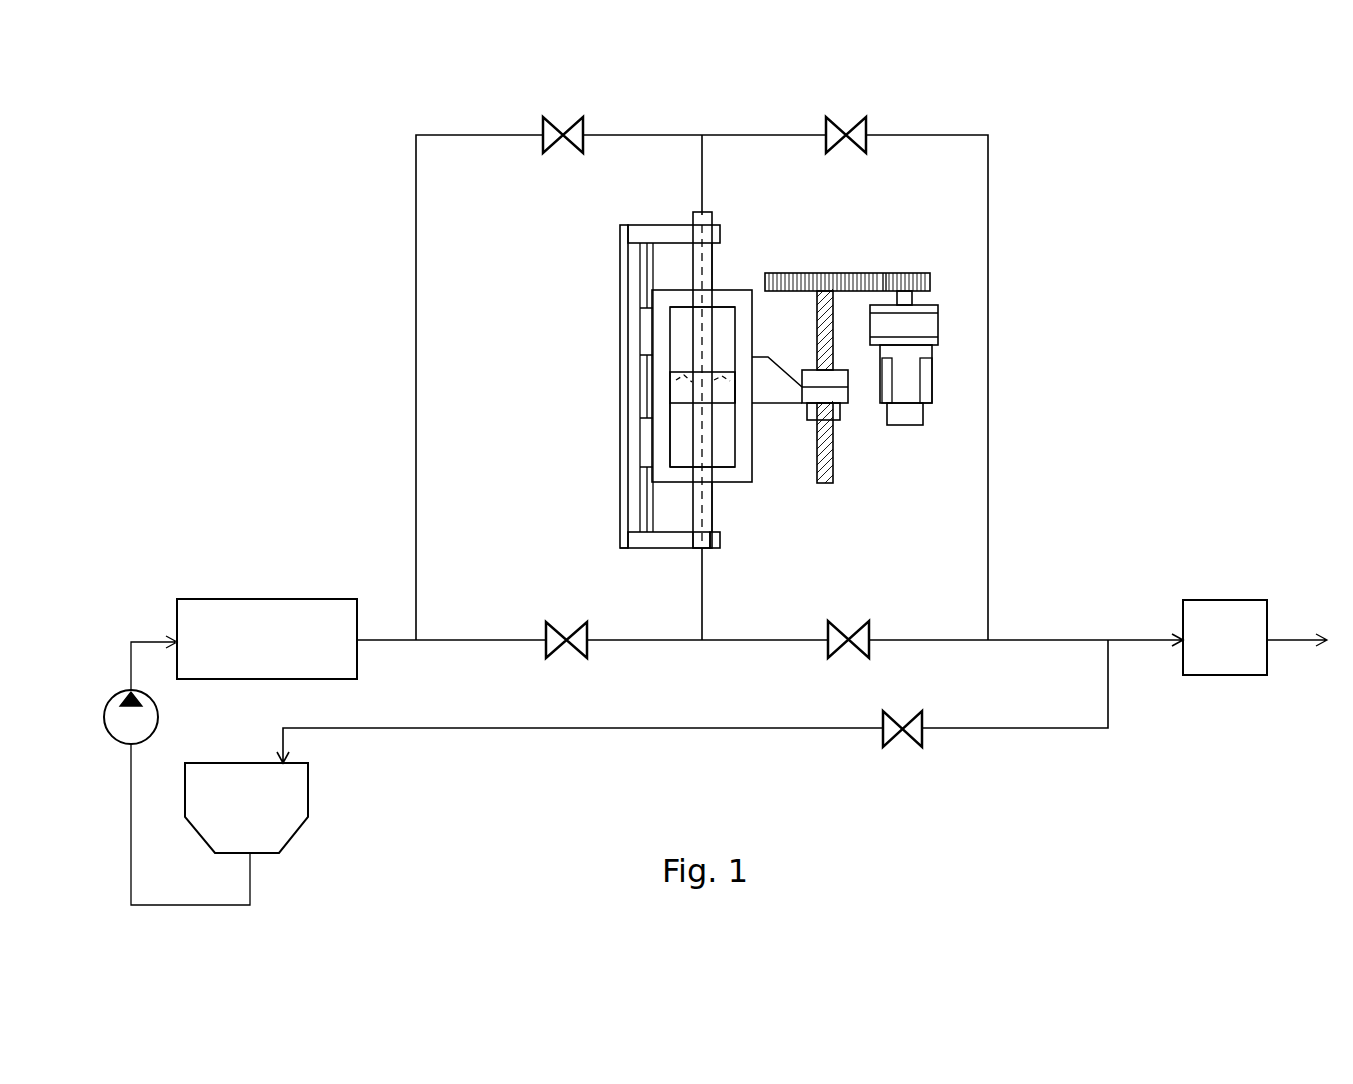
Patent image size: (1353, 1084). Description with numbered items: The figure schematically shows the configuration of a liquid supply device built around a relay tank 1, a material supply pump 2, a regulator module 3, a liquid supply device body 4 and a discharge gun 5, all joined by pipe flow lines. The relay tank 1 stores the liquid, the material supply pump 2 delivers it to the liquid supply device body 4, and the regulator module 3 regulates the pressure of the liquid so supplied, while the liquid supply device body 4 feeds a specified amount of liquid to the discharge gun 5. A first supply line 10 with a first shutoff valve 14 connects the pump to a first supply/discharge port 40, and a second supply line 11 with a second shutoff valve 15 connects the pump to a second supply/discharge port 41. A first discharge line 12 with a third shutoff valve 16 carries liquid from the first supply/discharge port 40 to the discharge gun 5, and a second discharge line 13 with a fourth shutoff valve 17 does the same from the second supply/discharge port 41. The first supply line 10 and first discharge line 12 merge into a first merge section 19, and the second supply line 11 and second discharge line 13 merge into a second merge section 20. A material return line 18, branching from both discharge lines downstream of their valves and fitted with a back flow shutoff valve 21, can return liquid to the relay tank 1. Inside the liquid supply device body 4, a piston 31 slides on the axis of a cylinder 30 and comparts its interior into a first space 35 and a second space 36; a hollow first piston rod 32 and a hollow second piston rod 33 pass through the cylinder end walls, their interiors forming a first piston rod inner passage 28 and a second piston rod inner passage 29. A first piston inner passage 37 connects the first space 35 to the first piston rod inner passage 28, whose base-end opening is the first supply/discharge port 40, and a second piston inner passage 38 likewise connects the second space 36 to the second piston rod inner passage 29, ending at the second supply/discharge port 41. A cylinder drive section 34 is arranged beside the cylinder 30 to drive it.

The relay tank 1 is at (292, 830).
The material supply pump 2 is at (117, 706).
The regulator module 3 is at (285, 607).
The liquid supply device body 4 is at (577, 456).
The discharge gun 5 is at (1220, 612).
The first supply line 10 is at (416, 312).
The second supply line 11 is at (472, 640).
The first discharge line 12 is at (984, 133).
The second discharge line 13 is at (950, 640).
The first shutoff valve 14 is at (555, 120).
The second shutoff valve 15 is at (575, 628).
The third shutoff valve 16 is at (832, 118).
The fourth shutoff valve 17 is at (857, 655).
The material return line 18 is at (1020, 732).
The first merge section 19 is at (702, 160).
The second merge section 20 is at (702, 597).
The back flow shutoff valve 21 is at (912, 742).
The first piston rod inner passage 28 is at (712, 258).
The second piston rod inner passage 29 is at (712, 493).
The cylinder 30 is at (660, 322).
The piston 31 is at (682, 392).
The first piston rod 32 is at (697, 275).
The second piston rod 33 is at (700, 508).
The cylinder drive section 34 is at (882, 452).
The first space 35 is at (722, 338).
The second space 36 is at (678, 443).
The first piston inner passage 37 is at (680, 390).
The second piston inner passage 38 is at (738, 392).
The first supply/discharge port 40 is at (705, 222).
The second supply/discharge port 41 is at (705, 548).